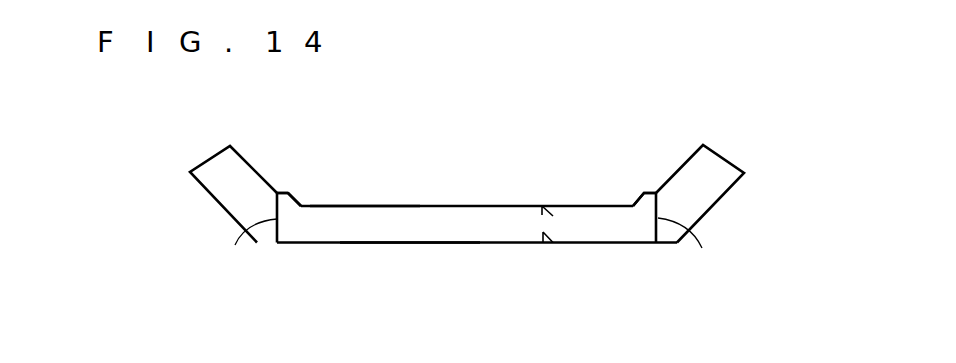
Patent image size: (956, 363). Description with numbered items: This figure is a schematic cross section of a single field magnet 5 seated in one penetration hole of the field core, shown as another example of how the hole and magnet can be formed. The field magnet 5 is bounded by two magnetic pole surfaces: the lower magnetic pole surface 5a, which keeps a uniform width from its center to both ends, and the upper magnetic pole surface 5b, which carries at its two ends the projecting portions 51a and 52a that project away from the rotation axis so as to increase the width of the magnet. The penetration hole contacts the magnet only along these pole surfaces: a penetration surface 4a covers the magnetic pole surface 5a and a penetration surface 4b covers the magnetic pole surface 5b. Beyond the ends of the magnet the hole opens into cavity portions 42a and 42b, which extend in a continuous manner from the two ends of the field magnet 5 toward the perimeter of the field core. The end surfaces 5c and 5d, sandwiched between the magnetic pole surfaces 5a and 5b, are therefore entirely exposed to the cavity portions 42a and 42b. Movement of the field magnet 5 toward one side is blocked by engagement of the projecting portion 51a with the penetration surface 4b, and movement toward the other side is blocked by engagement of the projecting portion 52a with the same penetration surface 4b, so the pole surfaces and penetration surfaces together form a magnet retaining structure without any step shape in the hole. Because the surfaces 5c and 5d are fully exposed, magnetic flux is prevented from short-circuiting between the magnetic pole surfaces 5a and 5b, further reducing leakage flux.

The field magnet 5 is at (467, 228).
The magnetic pole surface 5a is at (367, 243).
The magnetic pole surface 5b is at (360, 206).
The surface 5c is at (251, 244).
The surface 5d is at (686, 245).
The penetration surface 4a is at (553, 233).
The penetration surface 4b is at (553, 216).
The cavity portion 42a is at (227, 192).
The cavity portion 42b is at (715, 188).
The projecting portion 51a is at (287, 206).
The projecting portion 52a is at (647, 204).